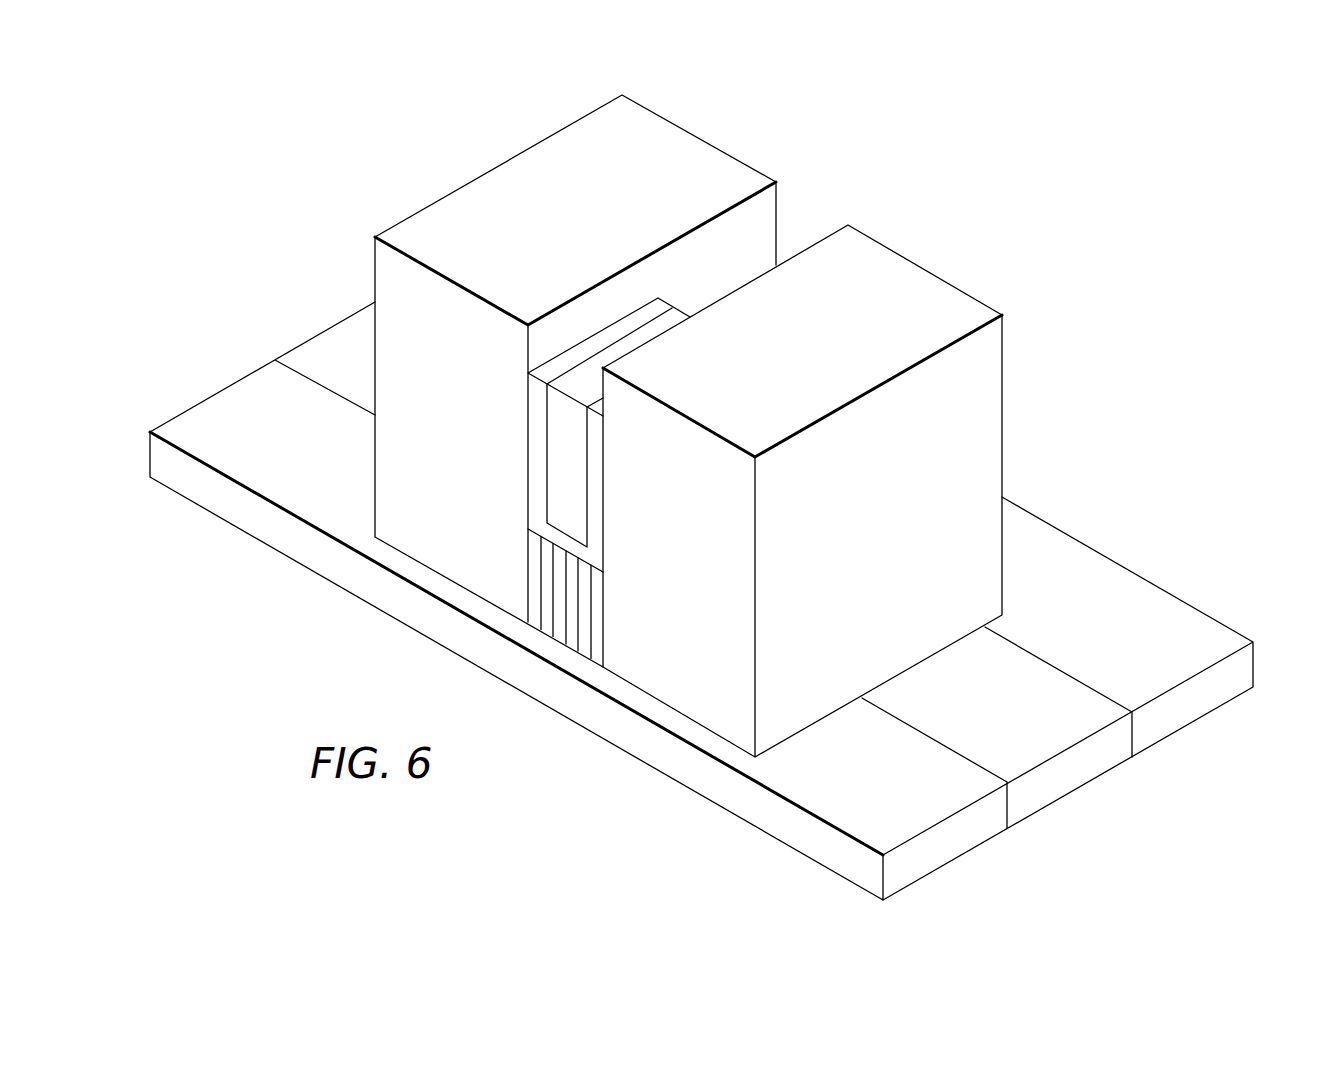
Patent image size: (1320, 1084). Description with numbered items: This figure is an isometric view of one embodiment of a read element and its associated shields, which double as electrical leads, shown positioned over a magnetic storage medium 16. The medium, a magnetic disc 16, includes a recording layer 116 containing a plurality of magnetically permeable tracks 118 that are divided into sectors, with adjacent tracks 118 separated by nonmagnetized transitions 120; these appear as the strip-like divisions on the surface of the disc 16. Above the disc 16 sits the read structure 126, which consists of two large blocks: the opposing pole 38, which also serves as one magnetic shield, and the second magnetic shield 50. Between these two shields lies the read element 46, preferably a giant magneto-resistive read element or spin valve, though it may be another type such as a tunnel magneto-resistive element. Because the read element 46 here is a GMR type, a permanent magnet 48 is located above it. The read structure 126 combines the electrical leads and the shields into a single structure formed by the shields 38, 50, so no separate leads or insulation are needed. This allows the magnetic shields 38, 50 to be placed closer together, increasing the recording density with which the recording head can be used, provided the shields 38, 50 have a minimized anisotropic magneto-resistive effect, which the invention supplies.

The magnetic storage medium 16 is at (216, 350).
The opposing pole 38 is at (820, 357).
The read element 46 is at (547, 573).
The permanent magnet 48 is at (583, 470).
The magnetic shield 50 is at (588, 224).
The recording layer 116 is at (1120, 513).
The magnetically permeable tracks 118 is at (900, 798).
The nonmagnetized transitions 120 is at (1015, 737).
The read structure 126 is at (838, 132).